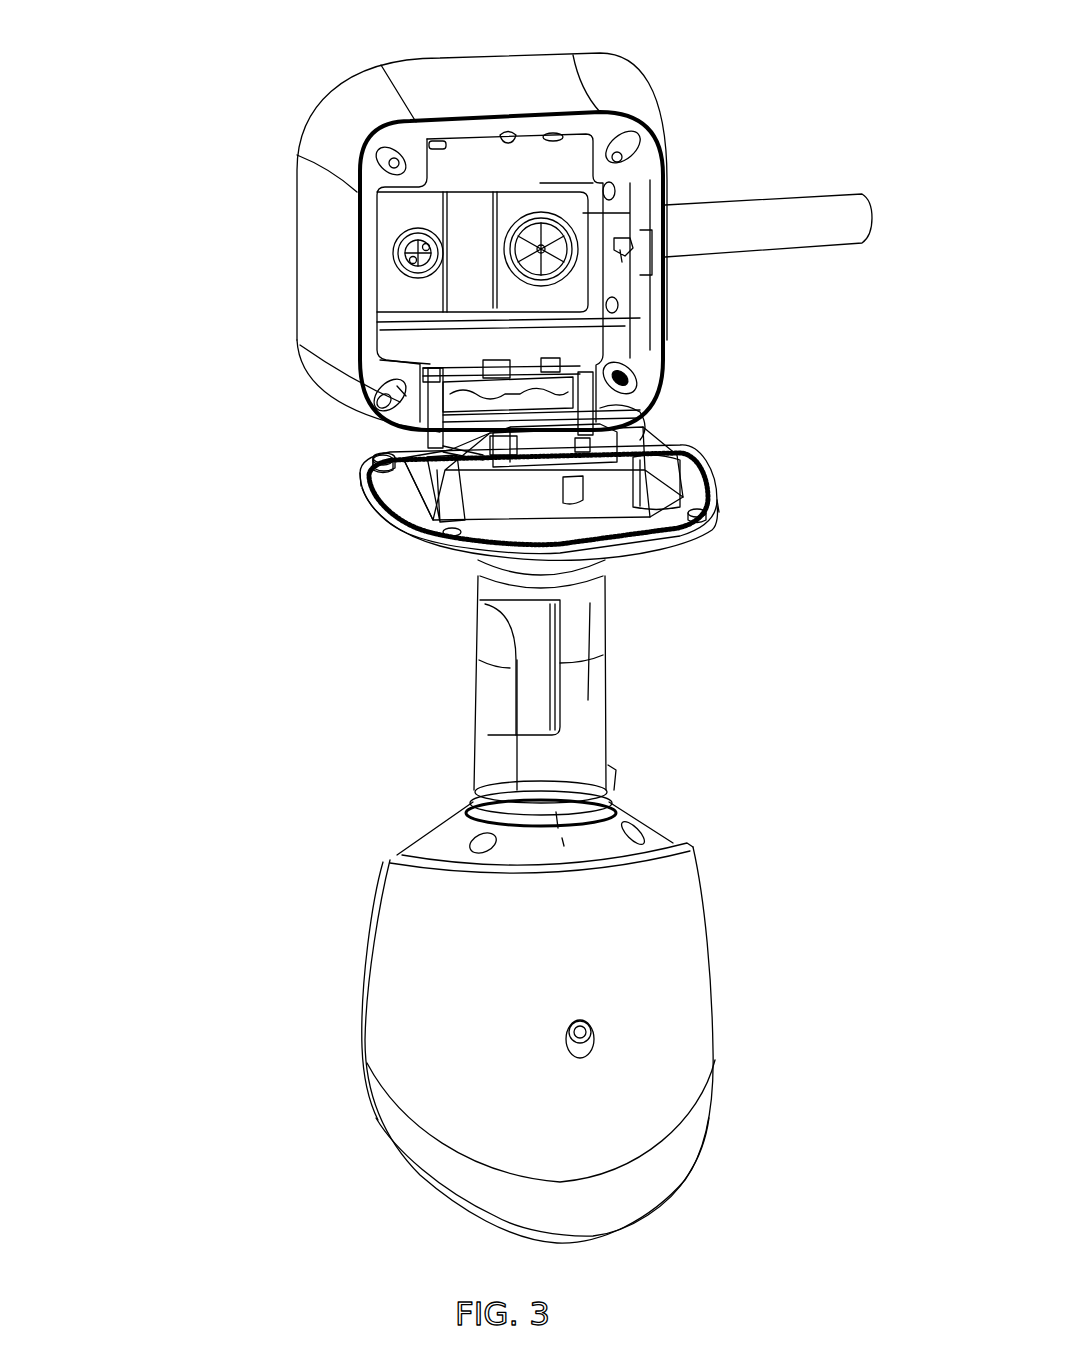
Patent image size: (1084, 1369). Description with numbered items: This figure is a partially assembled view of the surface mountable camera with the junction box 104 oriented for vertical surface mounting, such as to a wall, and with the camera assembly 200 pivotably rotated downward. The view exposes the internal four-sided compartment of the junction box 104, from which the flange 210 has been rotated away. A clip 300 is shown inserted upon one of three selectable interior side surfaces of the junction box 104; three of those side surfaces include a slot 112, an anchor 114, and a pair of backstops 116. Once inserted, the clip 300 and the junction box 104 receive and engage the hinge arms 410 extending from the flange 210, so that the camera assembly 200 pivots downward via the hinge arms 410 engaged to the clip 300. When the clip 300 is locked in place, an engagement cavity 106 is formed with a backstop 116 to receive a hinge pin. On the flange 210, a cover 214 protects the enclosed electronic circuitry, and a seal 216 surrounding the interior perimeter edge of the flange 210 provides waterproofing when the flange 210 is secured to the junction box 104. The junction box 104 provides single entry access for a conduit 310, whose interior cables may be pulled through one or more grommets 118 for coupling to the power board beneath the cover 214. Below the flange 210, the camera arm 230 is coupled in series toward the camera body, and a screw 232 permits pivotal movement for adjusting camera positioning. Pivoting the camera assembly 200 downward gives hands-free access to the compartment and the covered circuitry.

The junction box 104 is at (308, 252).
The engagement cavity 106 is at (345, 365).
The slot 112 is at (648, 262).
The anchor 114 is at (508, 135).
The backstop 116 is at (436, 140).
The grommet 118 is at (530, 218).
The camera assembly 200 is at (128, 428).
The flange 210 is at (412, 520).
The cover 214 is at (678, 480).
The seal 216 is at (702, 500).
The camera arm 230 is at (605, 746).
The screw 232 is at (598, 662).
The clip 300 is at (490, 362).
The conduit 310 is at (848, 200).
The hinge arm 410 is at (632, 418).